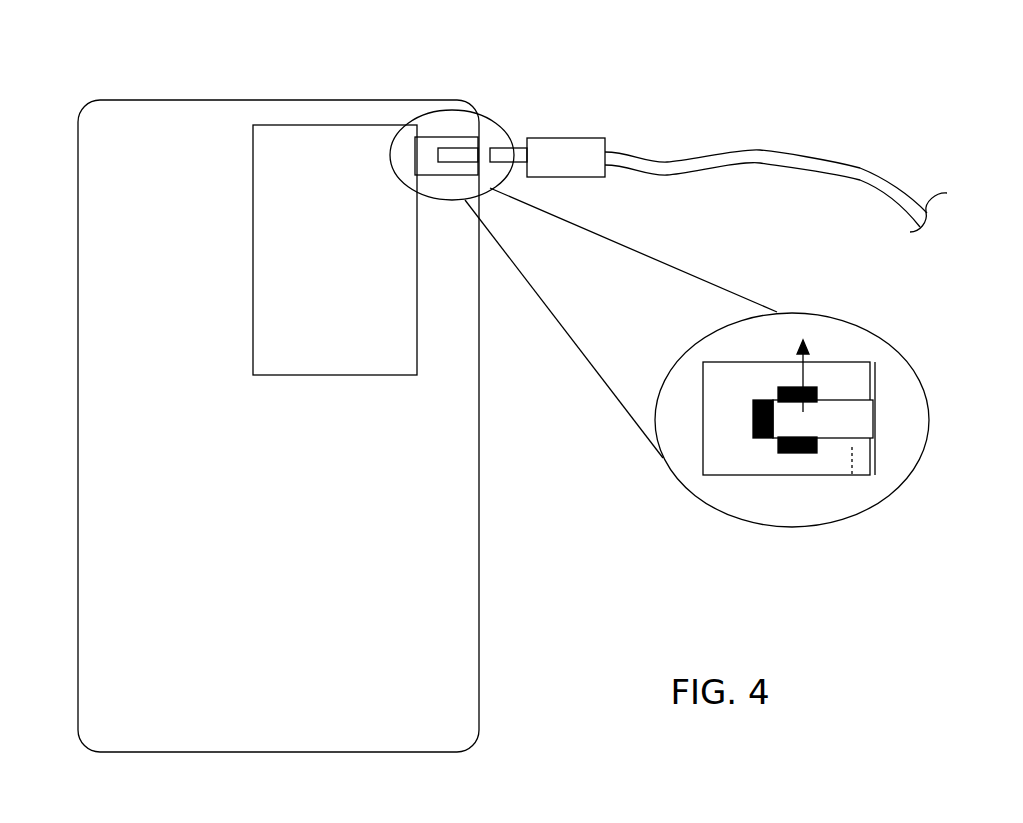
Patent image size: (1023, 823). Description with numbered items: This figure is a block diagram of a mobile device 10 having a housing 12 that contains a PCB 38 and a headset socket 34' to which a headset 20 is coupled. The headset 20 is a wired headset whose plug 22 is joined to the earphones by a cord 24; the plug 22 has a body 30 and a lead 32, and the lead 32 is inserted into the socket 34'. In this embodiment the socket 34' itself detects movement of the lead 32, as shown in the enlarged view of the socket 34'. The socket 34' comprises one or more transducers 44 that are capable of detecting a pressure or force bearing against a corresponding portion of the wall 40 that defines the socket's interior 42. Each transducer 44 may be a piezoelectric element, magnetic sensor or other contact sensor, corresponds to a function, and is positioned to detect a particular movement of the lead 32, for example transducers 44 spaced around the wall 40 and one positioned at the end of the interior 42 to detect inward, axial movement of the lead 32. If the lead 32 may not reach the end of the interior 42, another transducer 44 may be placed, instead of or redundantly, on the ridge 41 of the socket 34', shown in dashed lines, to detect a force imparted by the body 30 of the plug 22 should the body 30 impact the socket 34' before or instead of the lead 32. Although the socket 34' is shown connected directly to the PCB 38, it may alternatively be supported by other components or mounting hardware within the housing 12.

The mobile device 10 is at (324, 389).
The housing 12 is at (480, 513).
The headset 20 is at (776, 143).
The plug 22 is at (612, 190).
The cord 24 is at (860, 168).
The body 30 is at (587, 137).
The lead 32 is at (513, 150).
The socket 34' is at (663, 318).
The PCB 38 is at (367, 375).
The wall 40 is at (822, 377).
The ridge 41 is at (867, 388).
The interior 42 is at (452, 150).
The transducers 44 is at (803, 452).